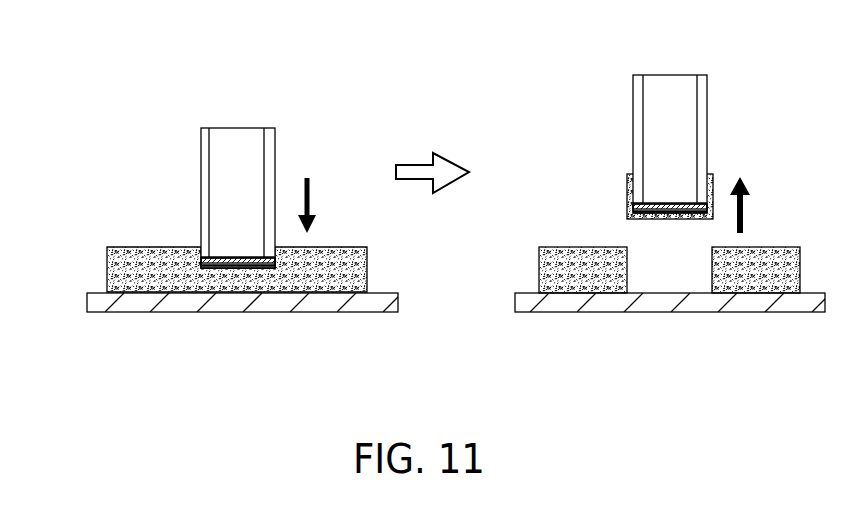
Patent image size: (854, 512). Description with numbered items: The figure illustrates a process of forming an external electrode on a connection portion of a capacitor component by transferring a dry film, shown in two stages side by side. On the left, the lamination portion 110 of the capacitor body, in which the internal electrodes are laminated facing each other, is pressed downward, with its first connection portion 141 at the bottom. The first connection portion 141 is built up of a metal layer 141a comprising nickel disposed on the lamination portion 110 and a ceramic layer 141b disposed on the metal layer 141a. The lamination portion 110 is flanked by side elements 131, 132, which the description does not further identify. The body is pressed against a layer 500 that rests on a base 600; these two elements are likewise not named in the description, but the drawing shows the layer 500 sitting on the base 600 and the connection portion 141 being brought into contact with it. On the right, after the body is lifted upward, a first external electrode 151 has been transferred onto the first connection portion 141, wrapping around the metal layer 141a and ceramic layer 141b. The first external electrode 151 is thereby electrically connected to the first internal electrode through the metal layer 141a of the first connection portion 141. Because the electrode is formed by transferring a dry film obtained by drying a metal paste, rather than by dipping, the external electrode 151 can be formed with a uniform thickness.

The lamination portion 110 is at (238, 138).
The first side wall of the head 131 is at (270, 148).
The second side wall of the head 132 is at (205, 148).
The first connection portion 141 is at (295, 362).
The metal layer 141a is at (230, 269).
The ceramic layer 141b is at (243, 270).
The first external electrode 151 is at (628, 187).
The adhesive/buffer layer 500 is at (107, 272).
The substrate 600 is at (97, 302).